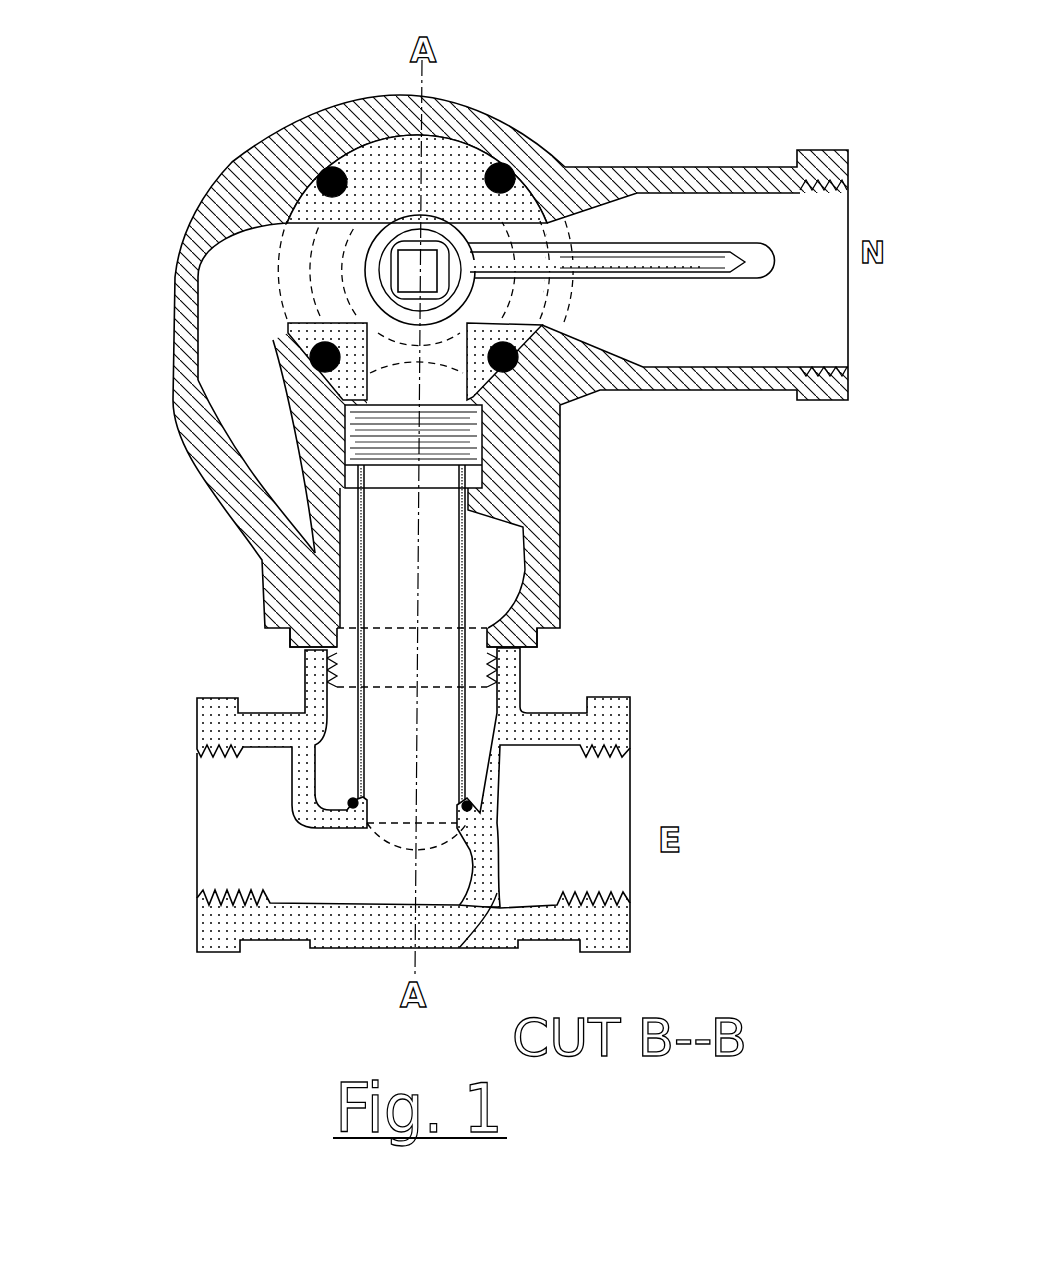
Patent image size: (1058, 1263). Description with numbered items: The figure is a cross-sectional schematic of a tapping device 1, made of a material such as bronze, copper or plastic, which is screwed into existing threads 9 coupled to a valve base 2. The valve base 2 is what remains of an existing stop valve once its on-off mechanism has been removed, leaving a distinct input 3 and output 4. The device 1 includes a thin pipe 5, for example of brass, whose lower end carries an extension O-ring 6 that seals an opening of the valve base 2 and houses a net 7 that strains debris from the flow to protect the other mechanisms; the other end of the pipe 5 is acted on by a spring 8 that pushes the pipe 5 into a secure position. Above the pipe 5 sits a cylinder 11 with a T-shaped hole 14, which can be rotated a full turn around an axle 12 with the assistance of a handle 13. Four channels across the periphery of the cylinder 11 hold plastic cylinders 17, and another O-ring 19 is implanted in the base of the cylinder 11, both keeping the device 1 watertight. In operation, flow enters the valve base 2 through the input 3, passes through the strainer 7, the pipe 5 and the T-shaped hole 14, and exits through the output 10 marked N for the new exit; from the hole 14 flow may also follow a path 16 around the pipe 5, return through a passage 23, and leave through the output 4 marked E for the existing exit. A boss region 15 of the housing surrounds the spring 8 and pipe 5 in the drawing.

The tapping device 1 is at (231, 164).
The valve base 2 is at (615, 720).
The input 3 is at (210, 780).
The output 4 is at (622, 867).
The pipe 5 is at (450, 753).
The extension O-ring 6 is at (303, 818).
The net 7 is at (378, 838).
The spring 8 is at (348, 474).
The existing threads 9 is at (495, 668).
The output 10 is at (837, 215).
The cylinder 11 is at (368, 172).
The axle 12 is at (450, 247).
The handle 13 is at (742, 273).
The T-shaped hole 14 is at (339, 281).
The central boss 15 is at (313, 416).
The path 16 is at (231, 386).
The plastic cylinders 17 is at (508, 168).
The O-ring 19 is at (315, 299).
The passage 23 is at (473, 640).